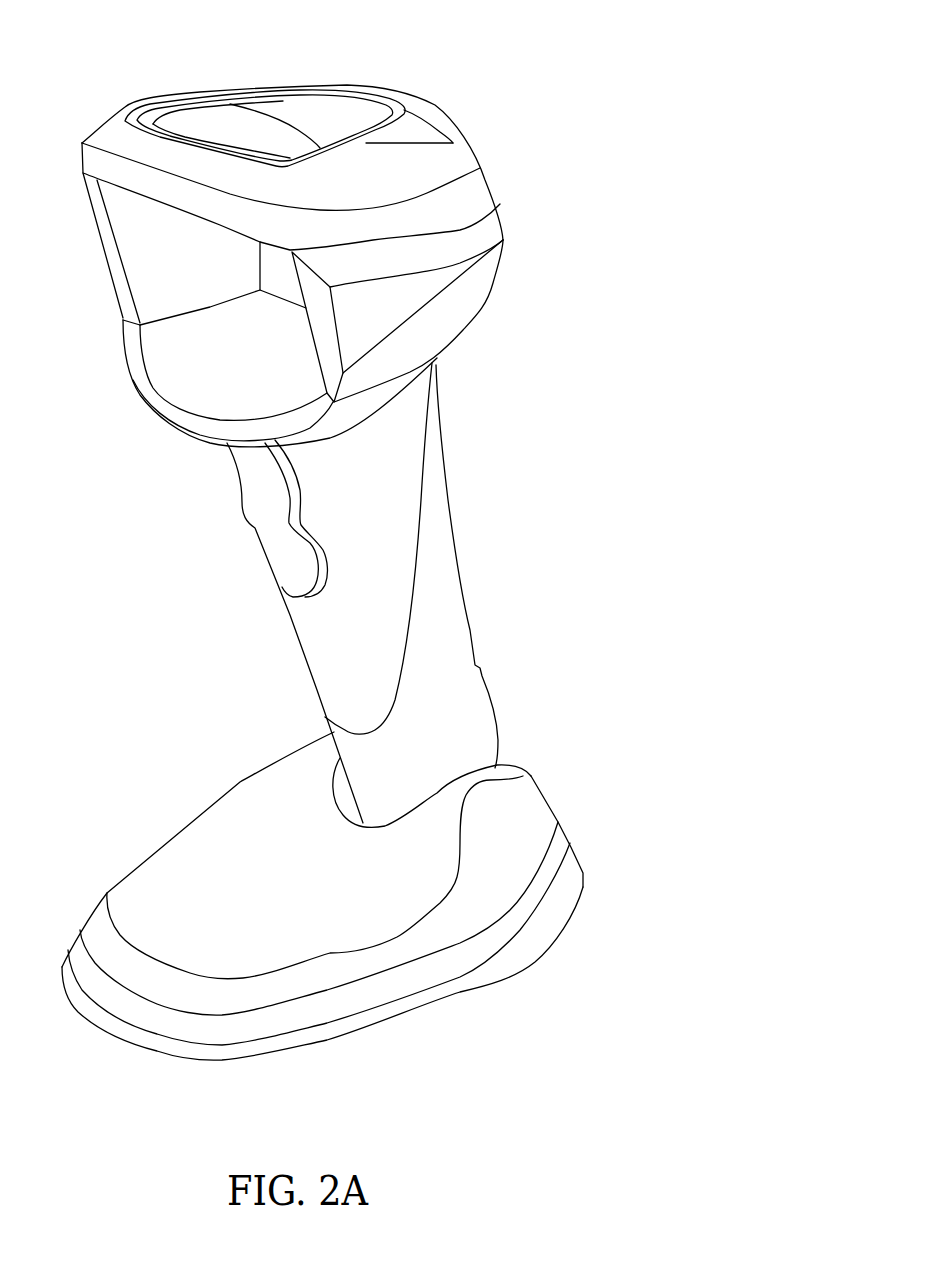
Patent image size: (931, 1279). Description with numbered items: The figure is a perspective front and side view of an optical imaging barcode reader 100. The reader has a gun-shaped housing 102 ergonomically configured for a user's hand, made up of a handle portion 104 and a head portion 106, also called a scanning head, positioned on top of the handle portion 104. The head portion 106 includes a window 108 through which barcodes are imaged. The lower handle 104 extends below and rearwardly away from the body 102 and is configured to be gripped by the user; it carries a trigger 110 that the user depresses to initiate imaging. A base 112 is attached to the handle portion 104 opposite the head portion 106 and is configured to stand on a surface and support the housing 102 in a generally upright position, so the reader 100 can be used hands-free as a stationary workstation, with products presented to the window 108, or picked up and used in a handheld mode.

The barcode reader 100 is at (550, 57).
The housing 102 is at (427, 471).
The handle portion 104 is at (458, 650).
The head portion 106 is at (348, 110).
The window 108 is at (290, 290).
The trigger 110 is at (259, 514).
The base 112 is at (140, 883).